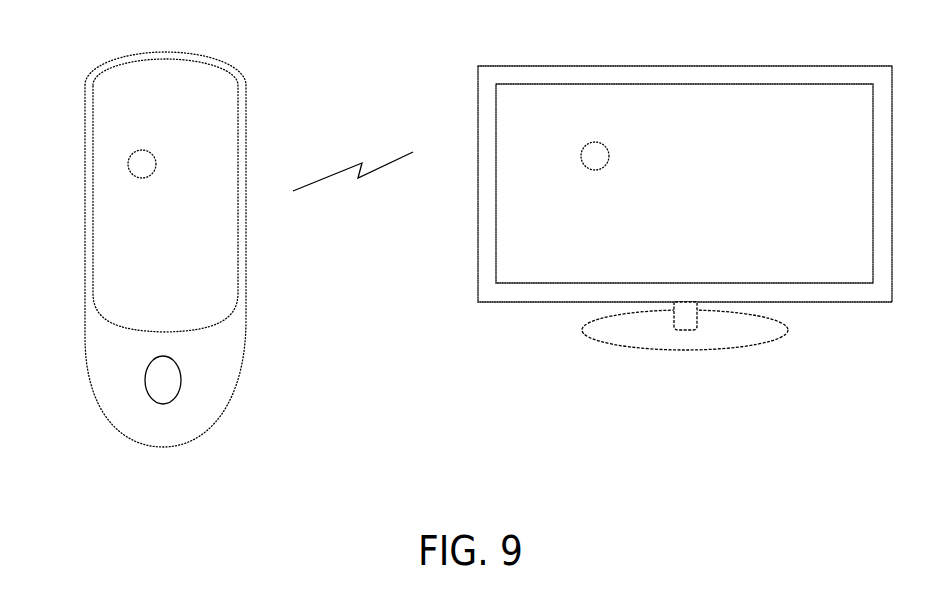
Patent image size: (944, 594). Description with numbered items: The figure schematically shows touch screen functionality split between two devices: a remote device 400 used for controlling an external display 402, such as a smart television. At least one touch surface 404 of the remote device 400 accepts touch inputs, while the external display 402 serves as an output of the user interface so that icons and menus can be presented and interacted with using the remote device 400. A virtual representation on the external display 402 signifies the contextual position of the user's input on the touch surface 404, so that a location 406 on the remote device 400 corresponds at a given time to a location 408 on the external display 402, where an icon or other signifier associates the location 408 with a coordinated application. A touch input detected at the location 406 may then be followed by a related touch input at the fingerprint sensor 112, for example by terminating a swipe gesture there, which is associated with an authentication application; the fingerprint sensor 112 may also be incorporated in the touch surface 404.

The remote device 400 is at (245, 122).
The external display 402 is at (717, 65).
The touch surface 404 is at (98, 237).
The location 406 is at (151, 155).
The location 408 is at (604, 145).
The fingerprint sensor 112 is at (177, 367).